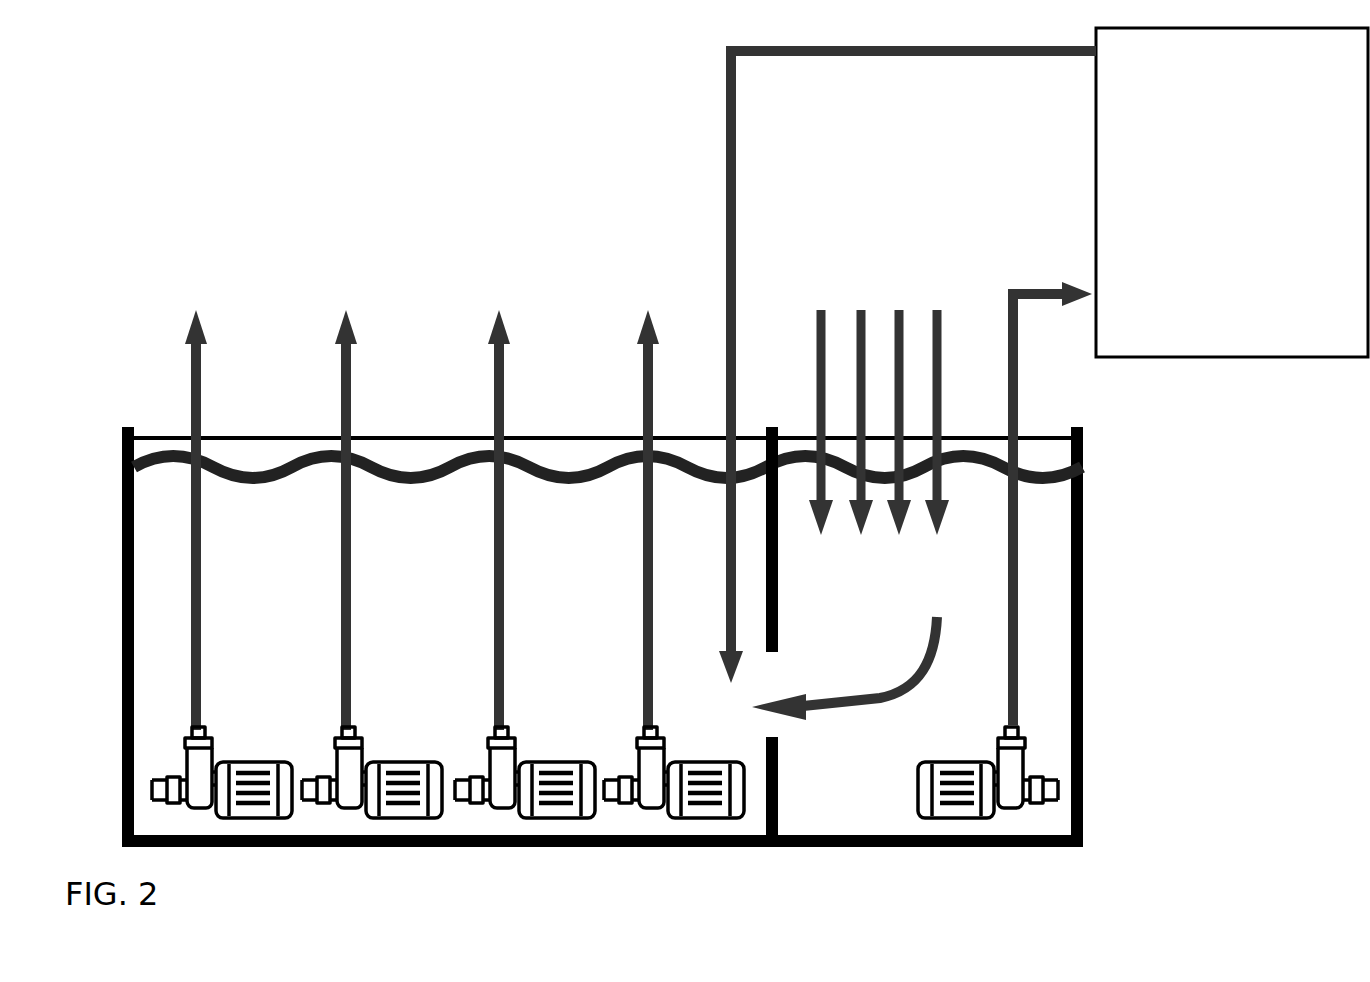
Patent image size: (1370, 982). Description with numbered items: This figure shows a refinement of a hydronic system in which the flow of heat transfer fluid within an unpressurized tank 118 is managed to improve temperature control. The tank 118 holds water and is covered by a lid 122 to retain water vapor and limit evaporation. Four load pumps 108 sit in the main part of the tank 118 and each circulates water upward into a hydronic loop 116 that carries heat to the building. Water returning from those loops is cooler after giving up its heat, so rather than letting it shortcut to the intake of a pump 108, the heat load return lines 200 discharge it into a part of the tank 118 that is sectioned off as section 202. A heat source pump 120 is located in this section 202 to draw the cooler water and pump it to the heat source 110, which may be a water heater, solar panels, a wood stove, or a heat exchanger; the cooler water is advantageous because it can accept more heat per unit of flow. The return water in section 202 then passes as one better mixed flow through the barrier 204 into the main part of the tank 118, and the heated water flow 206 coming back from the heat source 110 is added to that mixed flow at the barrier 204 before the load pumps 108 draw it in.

The pump 108 is at (225, 748).
The heat source 110 is at (1209, 138).
The hydronic loop 116 is at (172, 305).
The unpressurized tank 118 is at (1148, 653).
The heat source pump 120 is at (945, 748).
The lid 122 is at (1050, 418).
The heat load return line 200 is at (845, 298).
The section 202 is at (857, 620).
The barrier 204 is at (810, 692).
The heated water flow 206 is at (723, 33).